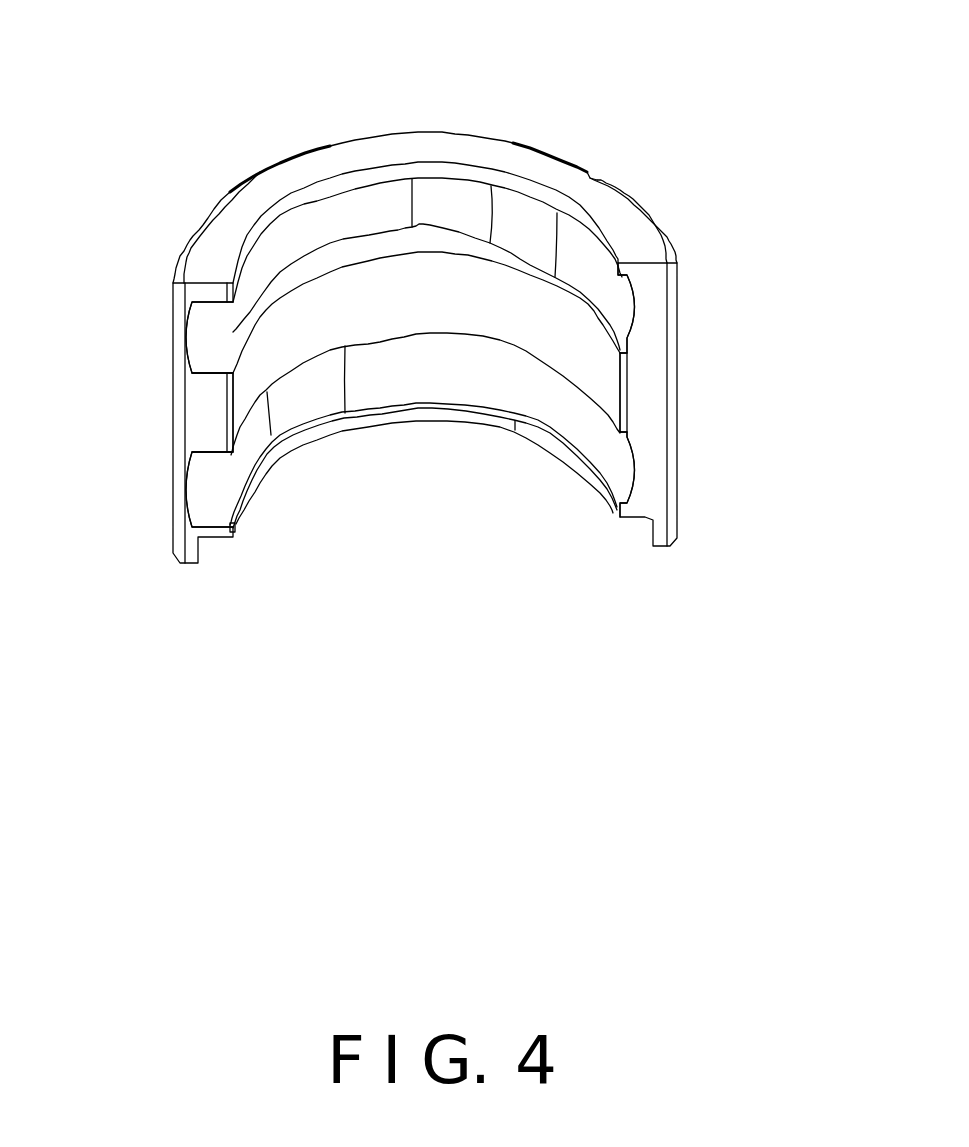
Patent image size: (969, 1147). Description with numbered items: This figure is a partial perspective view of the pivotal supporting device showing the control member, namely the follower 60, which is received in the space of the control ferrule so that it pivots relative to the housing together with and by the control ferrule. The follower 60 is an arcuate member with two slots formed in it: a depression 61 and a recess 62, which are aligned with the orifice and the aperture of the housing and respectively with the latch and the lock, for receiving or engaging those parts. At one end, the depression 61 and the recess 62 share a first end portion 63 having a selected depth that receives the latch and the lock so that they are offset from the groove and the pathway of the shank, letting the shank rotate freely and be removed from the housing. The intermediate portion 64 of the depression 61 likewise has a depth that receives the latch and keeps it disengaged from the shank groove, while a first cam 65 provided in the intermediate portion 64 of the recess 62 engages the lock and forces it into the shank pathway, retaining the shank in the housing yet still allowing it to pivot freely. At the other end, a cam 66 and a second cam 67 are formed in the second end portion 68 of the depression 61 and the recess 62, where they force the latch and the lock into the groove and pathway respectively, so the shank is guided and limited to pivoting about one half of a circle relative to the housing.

The follower 60 is at (425, 153).
The depression 61 is at (146, 337).
The recess 62 is at (143, 498).
The first end portion 63 is at (151, 415).
The intermediate portion 64 is at (425, 266).
The first cam 65 is at (423, 512).
The cam 66 is at (714, 276).
The second cam 67 is at (710, 474).
The second end portion 68 is at (735, 382).